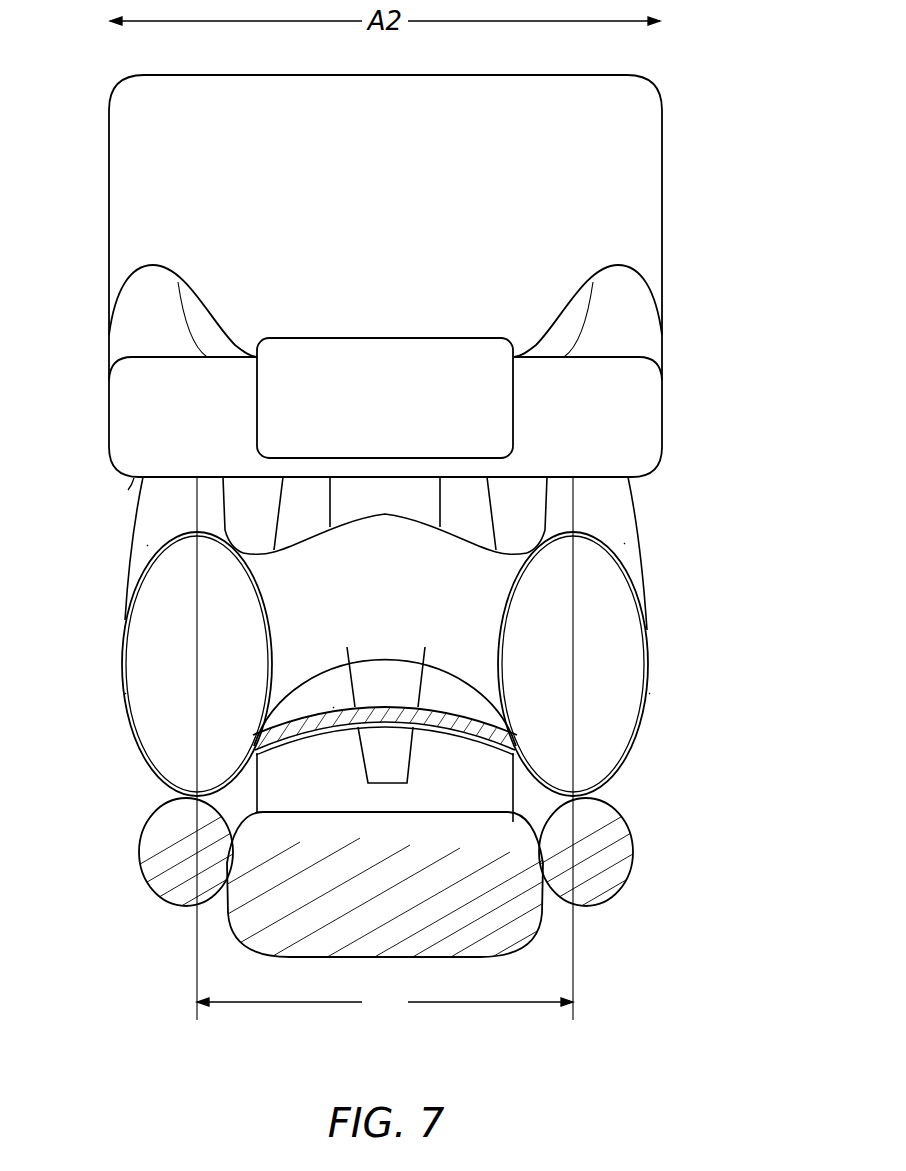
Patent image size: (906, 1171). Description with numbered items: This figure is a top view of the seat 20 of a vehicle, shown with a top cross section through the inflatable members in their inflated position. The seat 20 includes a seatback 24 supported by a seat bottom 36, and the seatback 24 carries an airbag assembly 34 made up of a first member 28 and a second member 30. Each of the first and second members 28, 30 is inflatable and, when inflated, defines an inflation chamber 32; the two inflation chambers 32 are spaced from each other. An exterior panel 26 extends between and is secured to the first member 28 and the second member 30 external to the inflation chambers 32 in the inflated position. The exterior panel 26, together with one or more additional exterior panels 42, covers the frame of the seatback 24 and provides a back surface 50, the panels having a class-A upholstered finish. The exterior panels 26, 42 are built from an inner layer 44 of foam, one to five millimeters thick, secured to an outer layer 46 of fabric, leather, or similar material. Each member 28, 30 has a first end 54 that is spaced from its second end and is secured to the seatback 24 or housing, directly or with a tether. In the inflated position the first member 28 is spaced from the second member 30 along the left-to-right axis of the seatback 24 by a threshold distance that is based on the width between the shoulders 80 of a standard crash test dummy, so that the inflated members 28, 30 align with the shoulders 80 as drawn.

The seat 20 is at (755, 141).
The seatback 24 is at (135, 327).
The exterior panel 26 is at (442, 728).
The first member 28 is at (125, 693).
The second member 30 is at (650, 693).
The inflation chamber 32 is at (180, 675).
The airbag assembly 34 is at (677, 607).
The seat bottom 36 is at (135, 170).
The additional exterior panel 42 is at (134, 478).
The inner layer 44 is at (333, 707).
The outer layer 46 is at (330, 731).
The back surface 50 is at (140, 479).
The first end 54 is at (147, 545).
The shoulders 80 is at (150, 860).